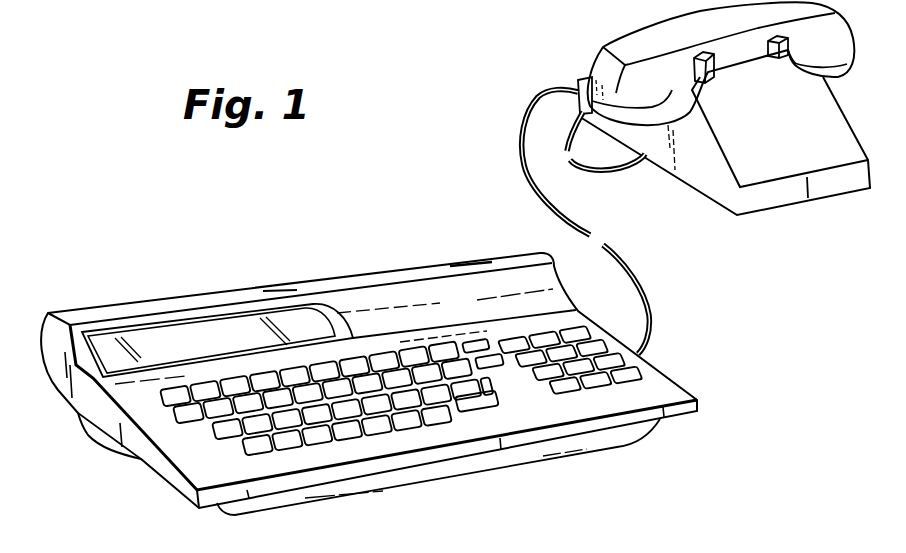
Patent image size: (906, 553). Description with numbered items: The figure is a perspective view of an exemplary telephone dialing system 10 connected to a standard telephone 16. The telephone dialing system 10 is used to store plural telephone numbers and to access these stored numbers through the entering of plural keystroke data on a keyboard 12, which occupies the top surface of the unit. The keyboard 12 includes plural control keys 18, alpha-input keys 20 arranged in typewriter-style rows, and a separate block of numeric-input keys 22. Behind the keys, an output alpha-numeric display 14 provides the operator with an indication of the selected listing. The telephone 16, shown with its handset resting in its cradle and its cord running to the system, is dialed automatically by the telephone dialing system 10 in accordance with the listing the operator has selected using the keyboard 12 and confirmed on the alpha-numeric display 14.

The telephone dialing system 10 is at (357, 282).
The keyboard 12 is at (353, 437).
The alpha-numeric display 14 is at (185, 347).
The telephone 16 is at (722, 185).
The control keys 18 is at (172, 389).
The alpha-input keys 20 is at (447, 423).
The numeric-input keys 22 is at (583, 397).